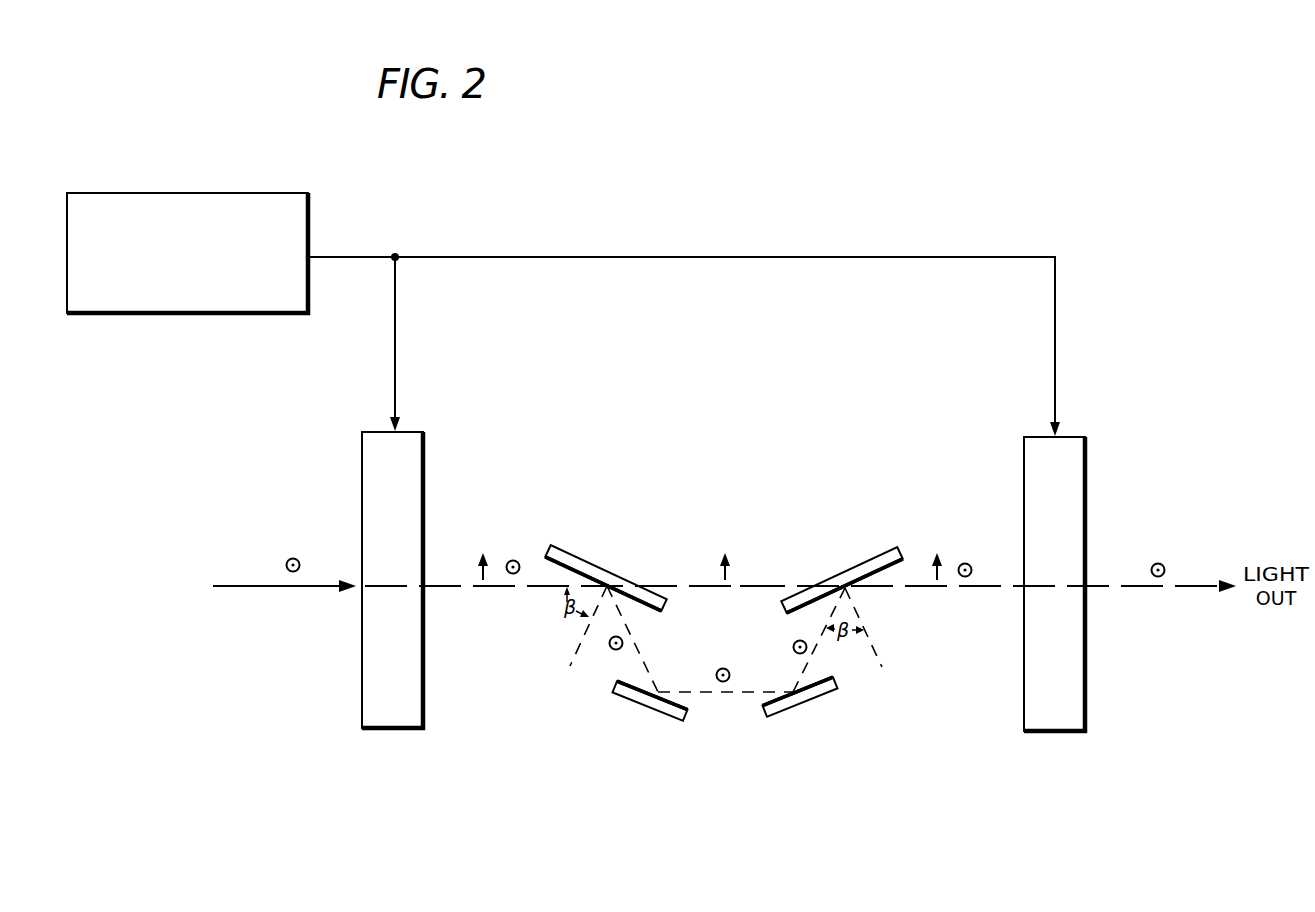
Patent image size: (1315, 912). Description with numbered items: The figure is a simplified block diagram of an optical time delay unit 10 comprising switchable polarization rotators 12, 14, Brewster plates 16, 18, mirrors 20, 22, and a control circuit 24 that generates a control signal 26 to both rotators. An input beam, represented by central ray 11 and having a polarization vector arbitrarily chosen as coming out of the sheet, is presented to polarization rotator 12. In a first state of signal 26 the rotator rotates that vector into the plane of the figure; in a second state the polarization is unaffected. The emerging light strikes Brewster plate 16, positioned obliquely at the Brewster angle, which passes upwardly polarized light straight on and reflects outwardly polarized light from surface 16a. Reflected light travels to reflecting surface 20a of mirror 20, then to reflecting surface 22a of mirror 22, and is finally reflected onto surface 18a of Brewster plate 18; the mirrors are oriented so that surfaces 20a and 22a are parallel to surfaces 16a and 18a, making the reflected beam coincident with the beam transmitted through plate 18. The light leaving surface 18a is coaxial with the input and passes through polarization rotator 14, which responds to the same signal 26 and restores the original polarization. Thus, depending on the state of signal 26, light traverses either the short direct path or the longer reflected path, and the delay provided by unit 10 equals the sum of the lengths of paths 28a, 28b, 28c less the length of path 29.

The optical time delay unit 10 is at (606, 152).
The central ray 11 is at (257, 586).
The switchable polarization rotator 12 is at (410, 729).
The switchable polarization rotator 14 is at (1046, 732).
The Brewster plate 16 is at (598, 565).
The surface of Brewster plate 16a is at (637, 605).
The Brewster plate 18 is at (882, 553).
The surface of Brewster plate 18a is at (793, 613).
The mirror 20 is at (670, 712).
The reflecting surface of mirror 20a is at (631, 681).
The mirror 22 is at (778, 708).
The reflecting surface of mirror 22a is at (817, 674).
The control circuit 24 is at (230, 193).
The control signal 26 is at (330, 257).
The path 28a is at (647, 657).
The path 28b is at (723, 693).
The path 28c is at (805, 663).
The path 29 is at (760, 585).